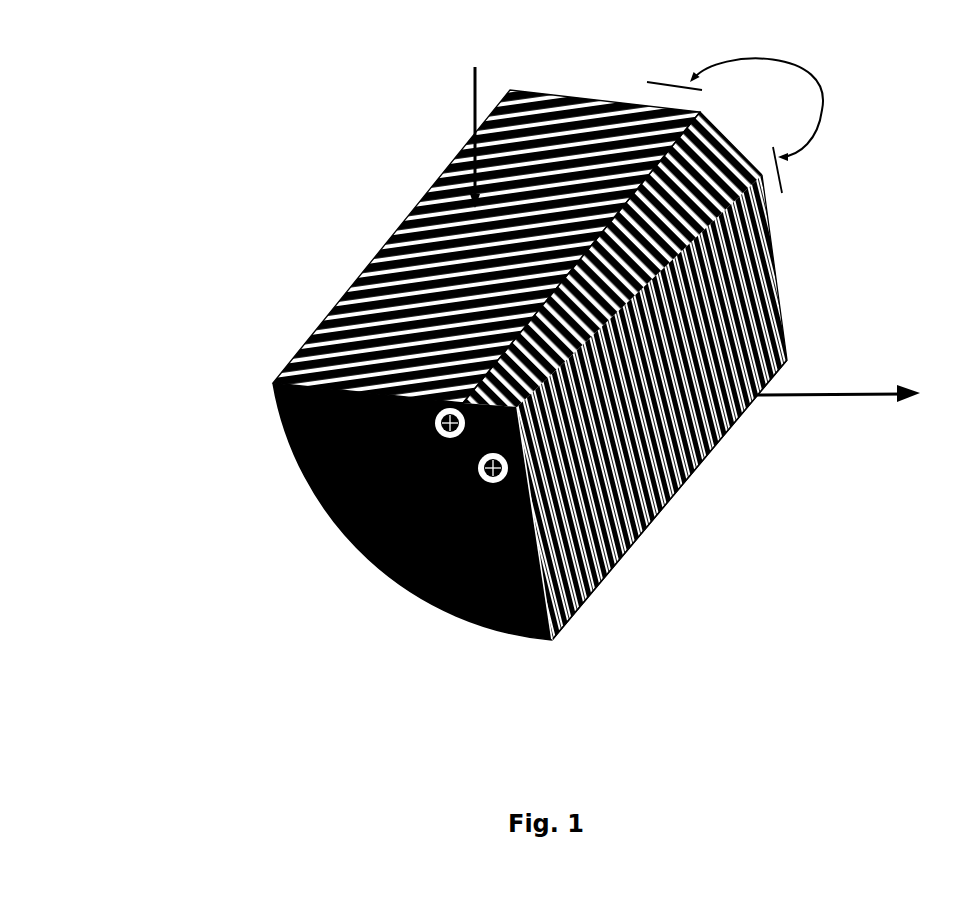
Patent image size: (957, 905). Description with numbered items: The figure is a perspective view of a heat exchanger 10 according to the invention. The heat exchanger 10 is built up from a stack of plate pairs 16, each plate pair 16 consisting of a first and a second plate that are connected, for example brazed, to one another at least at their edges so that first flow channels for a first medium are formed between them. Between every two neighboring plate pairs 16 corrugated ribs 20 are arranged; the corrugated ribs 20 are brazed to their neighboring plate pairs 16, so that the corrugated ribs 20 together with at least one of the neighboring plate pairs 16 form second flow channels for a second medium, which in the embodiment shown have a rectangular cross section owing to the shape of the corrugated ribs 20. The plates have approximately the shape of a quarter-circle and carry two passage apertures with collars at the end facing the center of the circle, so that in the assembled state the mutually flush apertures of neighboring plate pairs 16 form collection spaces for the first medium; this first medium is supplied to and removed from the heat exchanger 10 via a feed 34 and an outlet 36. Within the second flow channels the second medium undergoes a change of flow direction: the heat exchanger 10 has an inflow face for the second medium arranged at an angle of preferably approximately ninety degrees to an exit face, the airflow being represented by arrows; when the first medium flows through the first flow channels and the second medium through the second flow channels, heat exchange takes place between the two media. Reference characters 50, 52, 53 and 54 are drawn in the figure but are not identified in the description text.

The heat exchanger 10 is at (479, 359).
The plate pair 16 is at (273, 388).
The corrugated ribs 20 is at (320, 323).
The feed 34 is at (330, 510).
The outlet 36 is at (457, 617).
The channels 50 is at (568, 140).
The edge 52 is at (690, 465).
The vertical axis 53 is at (475, 112).
The horizontal axis 54 is at (823, 397).